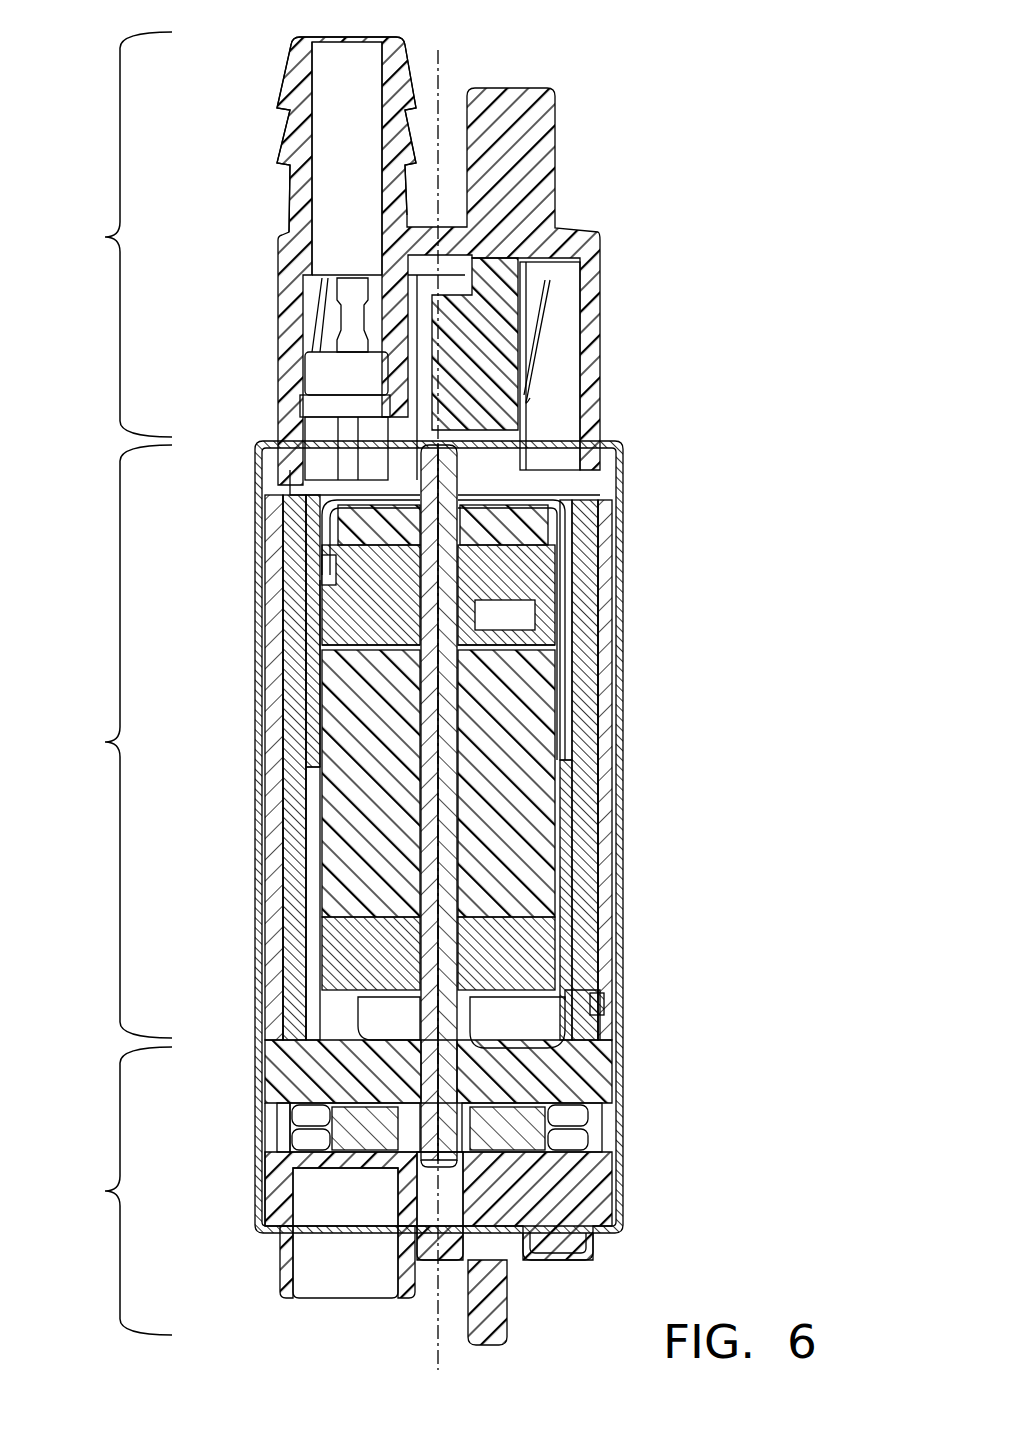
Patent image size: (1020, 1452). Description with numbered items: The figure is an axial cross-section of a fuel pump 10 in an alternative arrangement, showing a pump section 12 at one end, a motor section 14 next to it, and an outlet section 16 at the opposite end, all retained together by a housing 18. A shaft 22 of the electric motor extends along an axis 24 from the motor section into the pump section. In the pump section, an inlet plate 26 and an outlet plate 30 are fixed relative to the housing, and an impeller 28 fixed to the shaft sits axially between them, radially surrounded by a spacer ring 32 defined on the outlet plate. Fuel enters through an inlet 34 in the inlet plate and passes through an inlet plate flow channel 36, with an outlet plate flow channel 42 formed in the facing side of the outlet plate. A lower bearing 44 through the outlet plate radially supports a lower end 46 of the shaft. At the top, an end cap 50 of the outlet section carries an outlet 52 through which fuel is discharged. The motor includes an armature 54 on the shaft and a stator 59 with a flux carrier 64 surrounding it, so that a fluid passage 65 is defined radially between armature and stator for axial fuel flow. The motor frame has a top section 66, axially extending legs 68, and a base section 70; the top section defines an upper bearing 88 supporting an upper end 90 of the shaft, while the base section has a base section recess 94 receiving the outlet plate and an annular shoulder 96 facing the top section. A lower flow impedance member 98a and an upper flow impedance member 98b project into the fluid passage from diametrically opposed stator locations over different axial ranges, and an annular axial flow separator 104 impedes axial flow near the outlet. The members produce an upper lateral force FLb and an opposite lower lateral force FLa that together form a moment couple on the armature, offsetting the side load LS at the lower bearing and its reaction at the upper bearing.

The fuel pump 10 is at (680, 62).
The pump section 12 is at (105, 1191).
The motor section 14 is at (105, 742).
The outlet section 16 is at (105, 237).
The housing 18 is at (478, 437).
The shaft 22 is at (455, 805).
The axis 24 is at (443, 60).
The inlet plate 26 is at (610, 1200).
The impeller 28 is at (565, 1158).
The outlet plate 30 is at (612, 1068).
The spacer ring 32 is at (268, 1142).
The inlet 34 is at (320, 1285).
The inlet plate flow channel 36 is at (565, 1160).
The outlet plate flow channel 42 is at (585, 1118).
The lower bearing 44 is at (417, 1012).
The lower end 46 is at (560, 1142).
The end cap 50 is at (592, 310).
The outlet 52 is at (327, 45).
The armature 54 is at (320, 858).
The stator 59 is at (245, 792).
The flux carrier 64 is at (612, 778).
The fluid passage 65 is at (305, 880).
The top section 66 is at (585, 592).
The legs 68 is at (312, 705).
The base section 70 is at (612, 1028).
The upper bearing 88 is at (520, 520).
The upper end 90 is at (385, 480).
The base section recess 94 is at (600, 1005).
The annular shoulder 96 is at (315, 945).
The lower flow impedance member 98a is at (560, 805).
The upper flow impedance member 98b is at (320, 662).
The axial flow separator 104 is at (312, 735).
The upper lateral force FLb is at (318, 627).
The lower lateral force FLa is at (567, 893).
The side load LS is at (417, 1072).